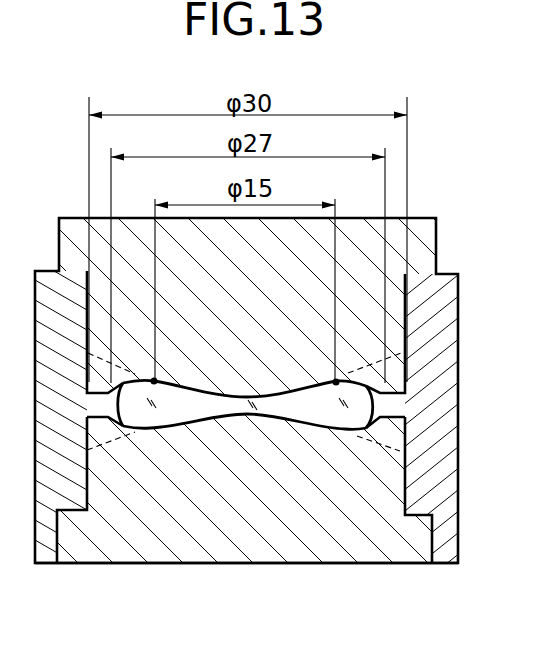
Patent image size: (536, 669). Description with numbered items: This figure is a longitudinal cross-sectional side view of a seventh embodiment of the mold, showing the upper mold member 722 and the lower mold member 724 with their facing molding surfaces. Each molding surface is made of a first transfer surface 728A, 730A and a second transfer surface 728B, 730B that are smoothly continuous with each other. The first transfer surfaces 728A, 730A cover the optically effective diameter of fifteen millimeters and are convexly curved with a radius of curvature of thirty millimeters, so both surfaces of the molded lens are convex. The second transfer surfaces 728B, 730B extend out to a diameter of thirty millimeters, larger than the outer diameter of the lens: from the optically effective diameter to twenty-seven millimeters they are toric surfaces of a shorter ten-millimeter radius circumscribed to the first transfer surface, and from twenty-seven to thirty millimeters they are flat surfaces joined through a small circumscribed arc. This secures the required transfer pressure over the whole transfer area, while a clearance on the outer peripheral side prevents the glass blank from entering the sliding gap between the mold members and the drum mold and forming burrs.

The upper mold member 722 is at (421, 218).
The lower mold member 724 is at (232, 563).
The first transfer surface 728A is at (178, 393).
The second transfer surface 728B is at (361, 389).
The first transfer surface 730A is at (208, 417).
The second transfer surface 730B is at (328, 428).